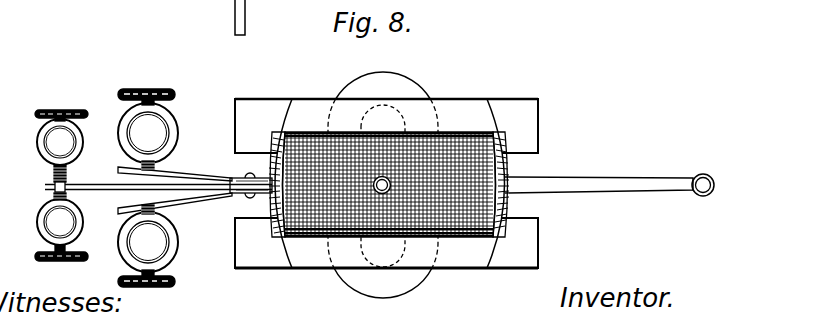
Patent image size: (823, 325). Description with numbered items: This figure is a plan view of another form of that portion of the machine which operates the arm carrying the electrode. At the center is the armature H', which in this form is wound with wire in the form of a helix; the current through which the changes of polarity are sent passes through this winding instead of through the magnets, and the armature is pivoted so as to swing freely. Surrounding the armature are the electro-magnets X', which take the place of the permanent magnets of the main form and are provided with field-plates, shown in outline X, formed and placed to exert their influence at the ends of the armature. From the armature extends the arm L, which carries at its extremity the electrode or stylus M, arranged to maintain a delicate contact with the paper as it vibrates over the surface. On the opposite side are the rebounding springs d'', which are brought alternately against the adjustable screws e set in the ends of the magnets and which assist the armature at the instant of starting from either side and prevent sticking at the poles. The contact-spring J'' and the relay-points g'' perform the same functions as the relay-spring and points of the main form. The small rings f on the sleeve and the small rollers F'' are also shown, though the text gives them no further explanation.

The oval outline of brush housing X is at (386, 198).
The electro-magnets X' is at (383, 157).
The armature H' is at (389, 184).
The arm L is at (599, 172).
The electrode or stylus M is at (703, 174).
The contact-spring J'' is at (158, 173).
The rings on sleeve f is at (245, 177).
The rebounding springs d'' is at (175, 188).
The screws e is at (148, 188).
The small rollers F'' is at (61, 185).
The relay-points g'' is at (65, 187).